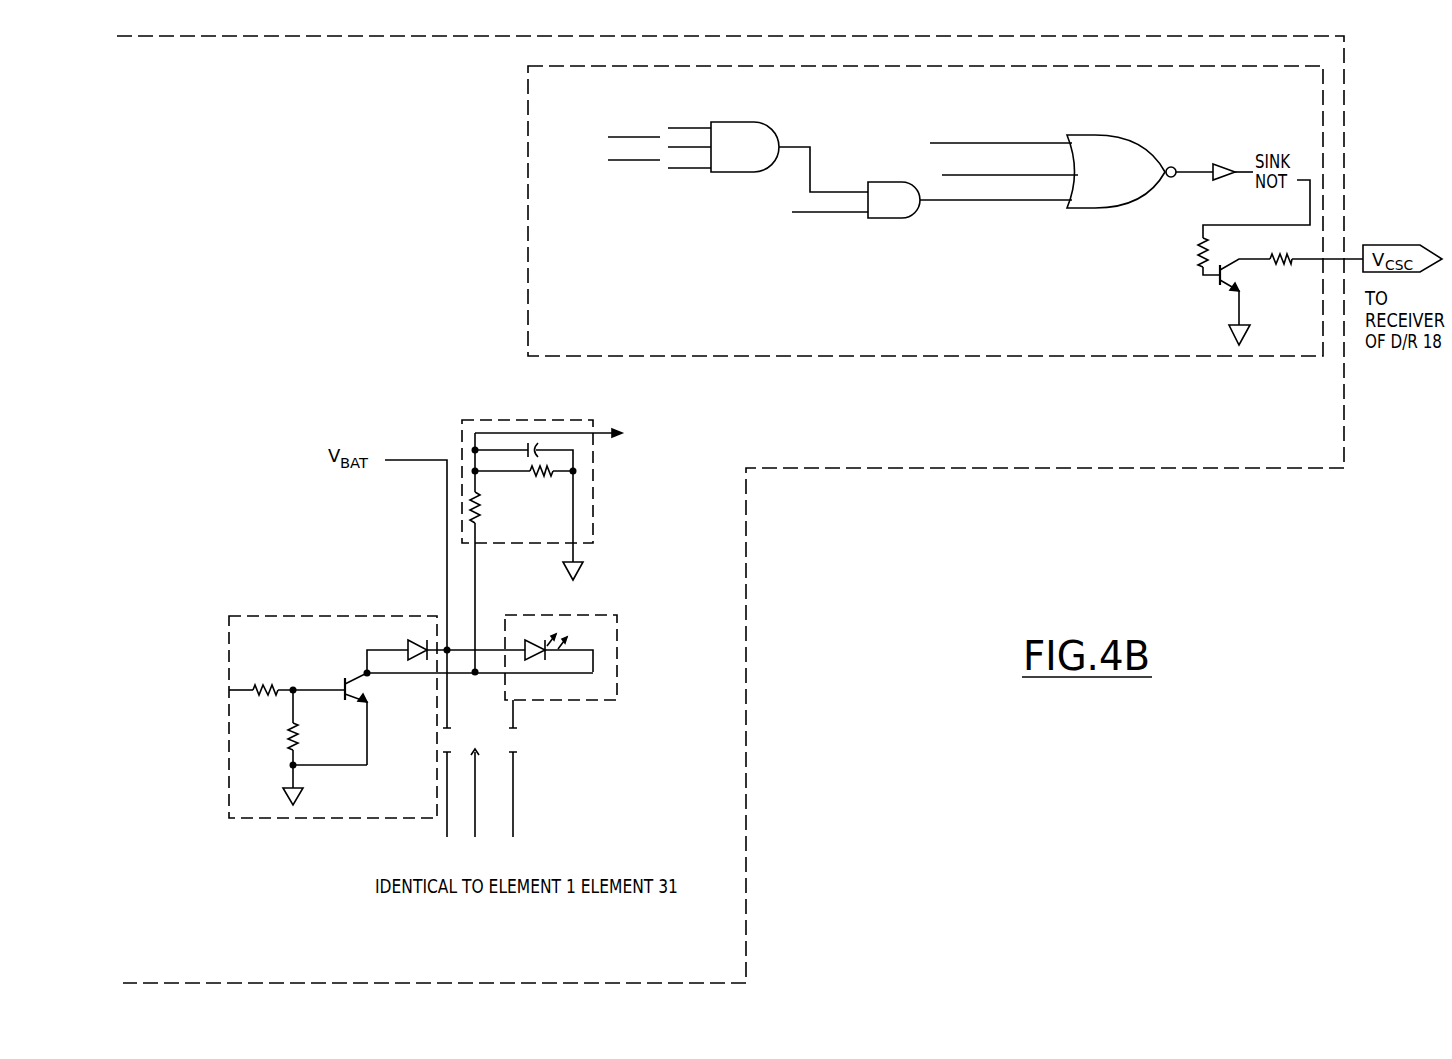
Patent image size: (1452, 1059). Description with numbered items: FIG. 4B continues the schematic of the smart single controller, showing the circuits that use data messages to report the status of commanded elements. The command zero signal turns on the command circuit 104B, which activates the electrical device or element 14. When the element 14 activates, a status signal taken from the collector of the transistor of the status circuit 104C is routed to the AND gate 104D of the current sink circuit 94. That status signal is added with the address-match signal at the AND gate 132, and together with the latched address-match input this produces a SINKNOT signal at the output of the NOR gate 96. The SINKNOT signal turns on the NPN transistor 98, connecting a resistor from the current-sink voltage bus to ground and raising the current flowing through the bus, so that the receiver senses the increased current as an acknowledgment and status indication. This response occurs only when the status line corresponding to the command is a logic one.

The current sink circuit 94 is at (1088, 356).
The AND gate 104D is at (772, 123).
The AND gate 132 is at (886, 219).
The NOR gate 96 is at (1140, 143).
The NPN transistor 98 is at (1236, 272).
The STATUS CKT 01 circuit 104C is at (593, 517).
The CMD CKT 0 circuit 104B is at (305, 617).
The electrical device 14 is at (617, 655).